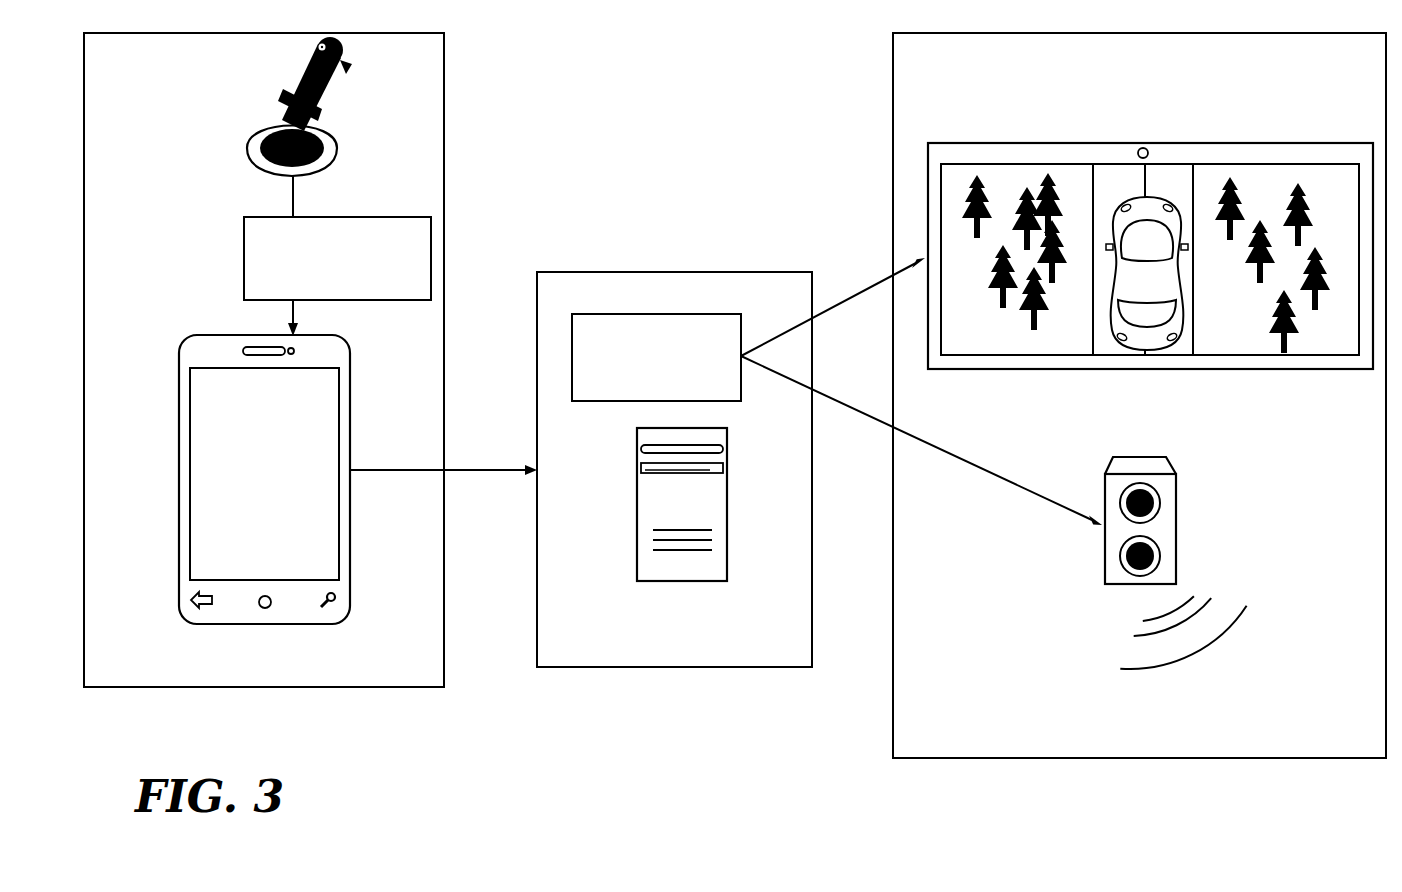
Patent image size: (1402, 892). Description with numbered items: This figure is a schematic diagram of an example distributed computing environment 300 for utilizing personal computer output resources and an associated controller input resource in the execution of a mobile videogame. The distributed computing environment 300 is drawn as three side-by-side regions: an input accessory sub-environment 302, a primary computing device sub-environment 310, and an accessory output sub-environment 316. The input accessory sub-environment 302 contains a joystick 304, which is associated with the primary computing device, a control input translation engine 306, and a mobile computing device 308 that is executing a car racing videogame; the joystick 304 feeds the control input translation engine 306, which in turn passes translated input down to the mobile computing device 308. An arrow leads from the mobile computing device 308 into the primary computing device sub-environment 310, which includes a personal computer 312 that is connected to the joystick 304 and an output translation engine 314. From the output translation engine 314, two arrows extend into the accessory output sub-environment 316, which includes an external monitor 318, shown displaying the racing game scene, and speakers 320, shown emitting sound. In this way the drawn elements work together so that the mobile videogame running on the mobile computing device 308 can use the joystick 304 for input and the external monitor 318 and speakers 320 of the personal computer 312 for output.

The distributed computing environment 300 is at (424, 778).
The input device environment 302 is at (432, 681).
The joystick 304 is at (299, 74).
The control input translation engine 306 is at (388, 296).
The mobile computing device 308 is at (178, 467).
The primary computing device sub-environment 310 is at (803, 662).
The personal computer 312 is at (636, 536).
The output translation engine 314 is at (731, 394).
The accessory output sub-environment 316 is at (1374, 752).
The external monitor 318 is at (1027, 143).
The speakers 320 is at (1112, 457).